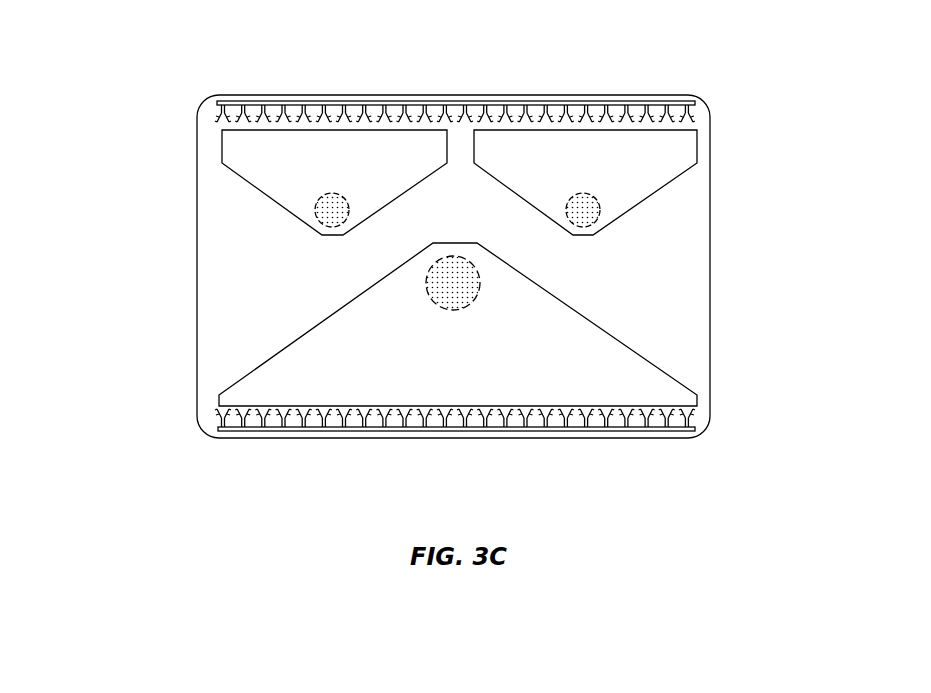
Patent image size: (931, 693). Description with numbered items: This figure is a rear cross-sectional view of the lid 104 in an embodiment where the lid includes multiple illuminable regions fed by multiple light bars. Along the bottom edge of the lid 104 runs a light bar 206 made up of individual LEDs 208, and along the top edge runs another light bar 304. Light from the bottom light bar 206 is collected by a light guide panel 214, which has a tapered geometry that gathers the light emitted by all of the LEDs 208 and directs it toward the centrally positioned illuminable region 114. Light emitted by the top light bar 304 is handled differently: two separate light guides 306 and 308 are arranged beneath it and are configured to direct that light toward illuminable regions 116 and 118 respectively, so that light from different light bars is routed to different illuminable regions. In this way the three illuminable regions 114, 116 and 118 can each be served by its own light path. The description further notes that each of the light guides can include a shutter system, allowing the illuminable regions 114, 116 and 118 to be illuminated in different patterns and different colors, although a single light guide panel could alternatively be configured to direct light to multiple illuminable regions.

The lid 104 is at (141, 81).
The light bar 304 is at (700, 112).
The light bar 206 is at (210, 422).
The LEDs 208 is at (390, 418).
The light guide 306 is at (334, 182).
The light guide 308 is at (585, 182).
The light guide panel 214 is at (458, 324).
The illuminable region 116 is at (323, 231).
The illuminable region 118 is at (600, 220).
The illuminable region 114 is at (453, 283).